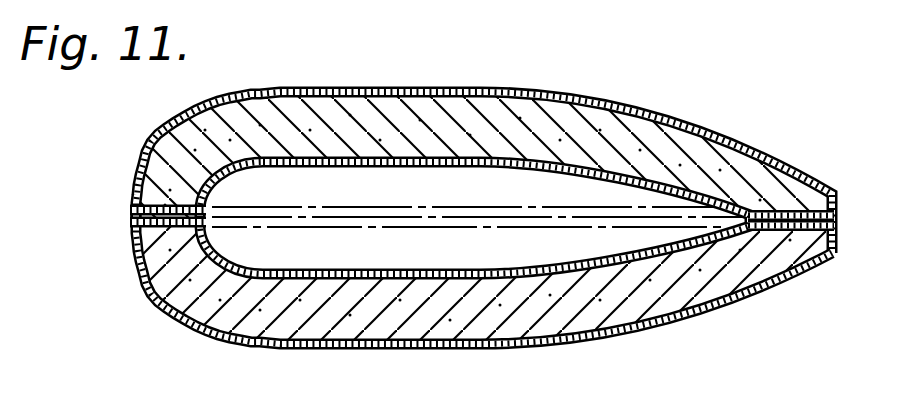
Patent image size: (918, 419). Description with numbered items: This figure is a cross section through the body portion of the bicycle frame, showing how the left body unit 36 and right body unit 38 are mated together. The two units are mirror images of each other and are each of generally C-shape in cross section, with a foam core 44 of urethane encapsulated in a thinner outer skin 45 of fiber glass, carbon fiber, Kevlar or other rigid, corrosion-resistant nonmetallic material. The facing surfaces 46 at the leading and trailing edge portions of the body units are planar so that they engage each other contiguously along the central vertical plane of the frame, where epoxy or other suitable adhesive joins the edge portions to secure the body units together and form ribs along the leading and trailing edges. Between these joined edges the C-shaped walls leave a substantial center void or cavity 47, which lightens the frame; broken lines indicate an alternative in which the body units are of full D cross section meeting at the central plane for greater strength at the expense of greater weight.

The left body unit 36 is at (525, 350).
The right body unit 38 is at (397, 87).
The foam core 44 is at (623, 130).
The outer skin 45 is at (314, 168).
The facing surfaces 46 is at (130, 213).
The central cavity 47 is at (492, 190).